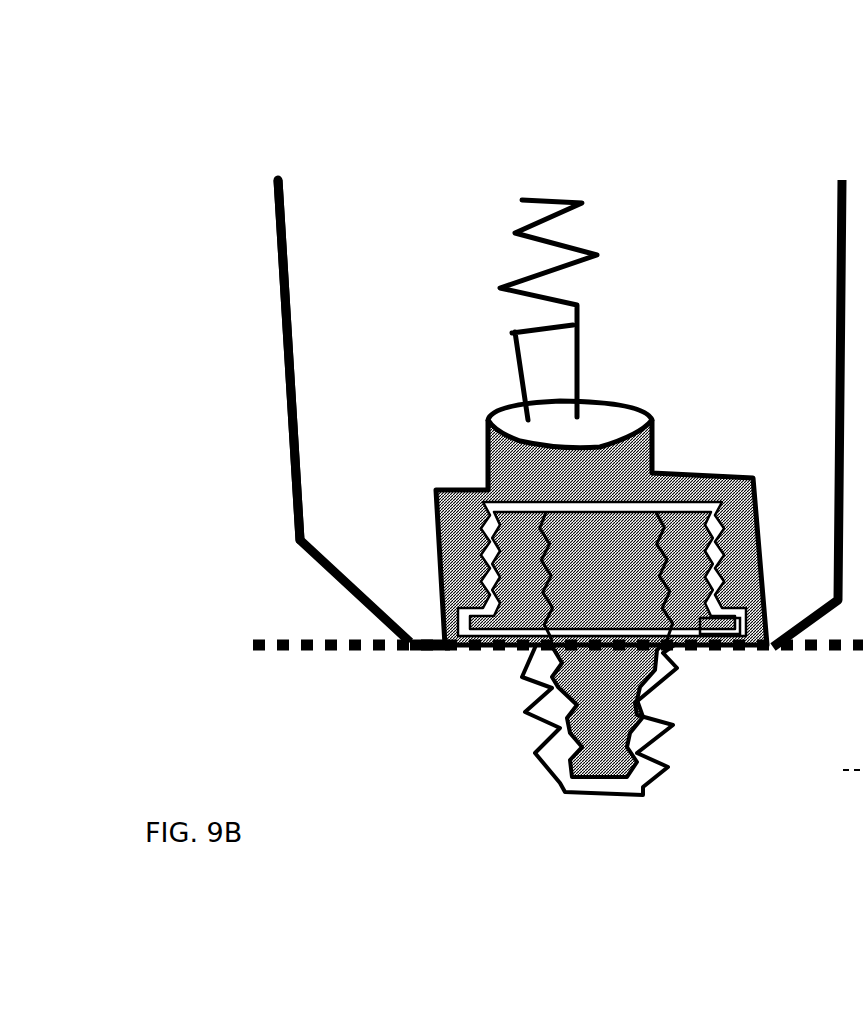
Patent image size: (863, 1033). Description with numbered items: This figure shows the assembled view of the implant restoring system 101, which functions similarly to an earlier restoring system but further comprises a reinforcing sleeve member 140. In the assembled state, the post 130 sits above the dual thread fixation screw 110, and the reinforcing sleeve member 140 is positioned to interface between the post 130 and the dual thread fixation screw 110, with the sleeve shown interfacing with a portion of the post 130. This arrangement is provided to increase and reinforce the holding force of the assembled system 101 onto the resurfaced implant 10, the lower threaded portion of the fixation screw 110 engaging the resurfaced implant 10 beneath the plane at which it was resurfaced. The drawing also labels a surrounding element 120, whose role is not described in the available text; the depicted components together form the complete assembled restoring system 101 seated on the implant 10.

The implant restoring system 101 is at (238, 206).
The hull wall 120 is at (292, 411).
The post 130 is at (583, 358).
The dual thread fixation screw 110 is at (597, 768).
The resurfaced implant 10 is at (556, 780).
The reinforcing sleeve member 140 is at (712, 650).